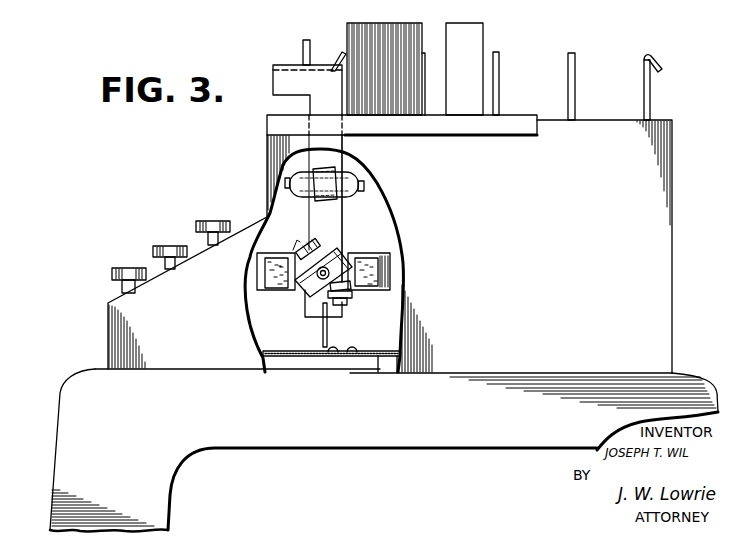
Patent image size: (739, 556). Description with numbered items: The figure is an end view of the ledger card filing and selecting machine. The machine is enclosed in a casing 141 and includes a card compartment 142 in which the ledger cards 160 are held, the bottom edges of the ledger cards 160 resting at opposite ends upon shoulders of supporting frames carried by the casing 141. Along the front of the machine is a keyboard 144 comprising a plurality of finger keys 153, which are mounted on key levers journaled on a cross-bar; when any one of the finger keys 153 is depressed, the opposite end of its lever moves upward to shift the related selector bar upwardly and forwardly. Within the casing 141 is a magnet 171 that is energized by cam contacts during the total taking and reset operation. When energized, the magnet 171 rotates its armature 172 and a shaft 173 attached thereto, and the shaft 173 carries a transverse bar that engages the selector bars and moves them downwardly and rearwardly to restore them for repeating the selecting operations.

The casing 141 is at (380, 374).
The card compartment 142 is at (384, 277).
The keyboard 144 is at (170, 242).
The finger keys 153 is at (196, 229).
The ledger cards 160 is at (367, 42).
The magnet 171 is at (377, 273).
The armature 172 is at (340, 258).
The shaft 173 is at (303, 284).